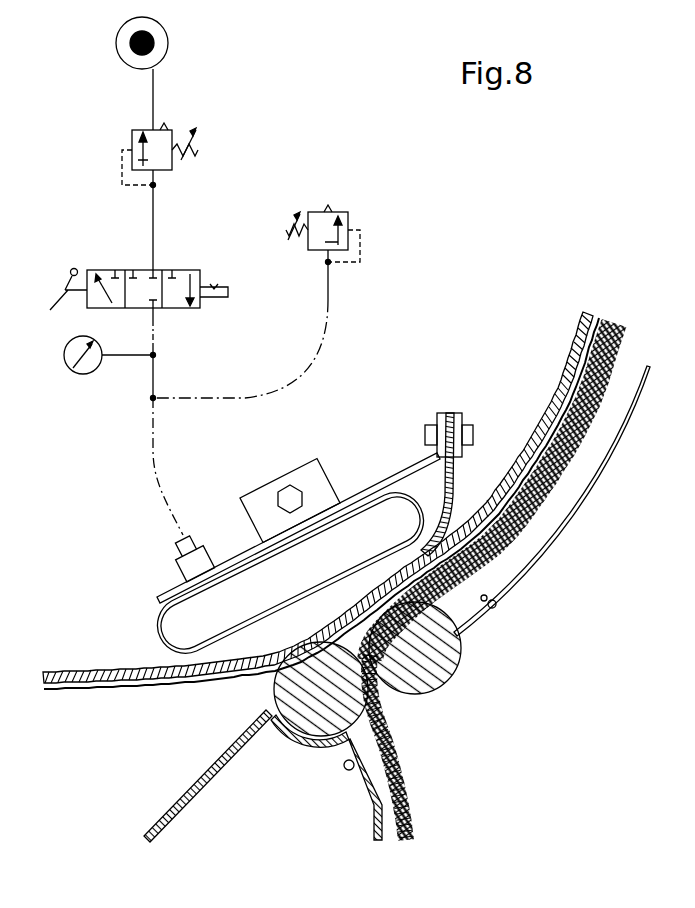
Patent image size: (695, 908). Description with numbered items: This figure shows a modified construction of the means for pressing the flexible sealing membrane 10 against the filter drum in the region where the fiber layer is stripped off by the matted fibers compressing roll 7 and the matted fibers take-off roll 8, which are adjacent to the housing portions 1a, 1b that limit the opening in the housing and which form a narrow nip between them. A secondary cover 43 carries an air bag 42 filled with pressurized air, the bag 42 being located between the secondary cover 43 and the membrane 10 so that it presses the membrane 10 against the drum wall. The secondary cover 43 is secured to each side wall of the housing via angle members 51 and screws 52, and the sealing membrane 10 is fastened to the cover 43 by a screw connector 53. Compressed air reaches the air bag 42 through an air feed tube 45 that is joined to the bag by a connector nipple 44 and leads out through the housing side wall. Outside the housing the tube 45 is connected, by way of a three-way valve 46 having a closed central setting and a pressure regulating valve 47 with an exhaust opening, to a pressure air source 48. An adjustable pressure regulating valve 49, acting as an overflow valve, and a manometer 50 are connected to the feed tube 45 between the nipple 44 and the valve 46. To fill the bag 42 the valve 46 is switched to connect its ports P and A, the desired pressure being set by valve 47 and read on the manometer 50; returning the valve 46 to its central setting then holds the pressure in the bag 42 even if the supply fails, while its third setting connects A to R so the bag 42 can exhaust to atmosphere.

The pressure air source 48 is at (168, 43).
The pressure regulating valve 47 is at (173, 140).
The three-way valve 46 is at (186, 270).
The adjustable pressure regulating valve 49 is at (346, 213).
The manometer 50 is at (66, 367).
The air feed tube 45 is at (196, 533).
The connector nipple 44 is at (178, 572).
The secondary cover 43 is at (158, 597).
The air bag 42 is at (158, 636).
The angle member 51 is at (312, 462).
The screw 52 is at (284, 490).
The screw connector 53 is at (428, 432).
The sealing membrane 10 is at (456, 480).
The housing portion 1a is at (556, 530).
The housing portion 1b is at (336, 740).
The matted fibers compressing roll 7 is at (447, 672).
The matted fibers take-off roll 8 is at (300, 715).